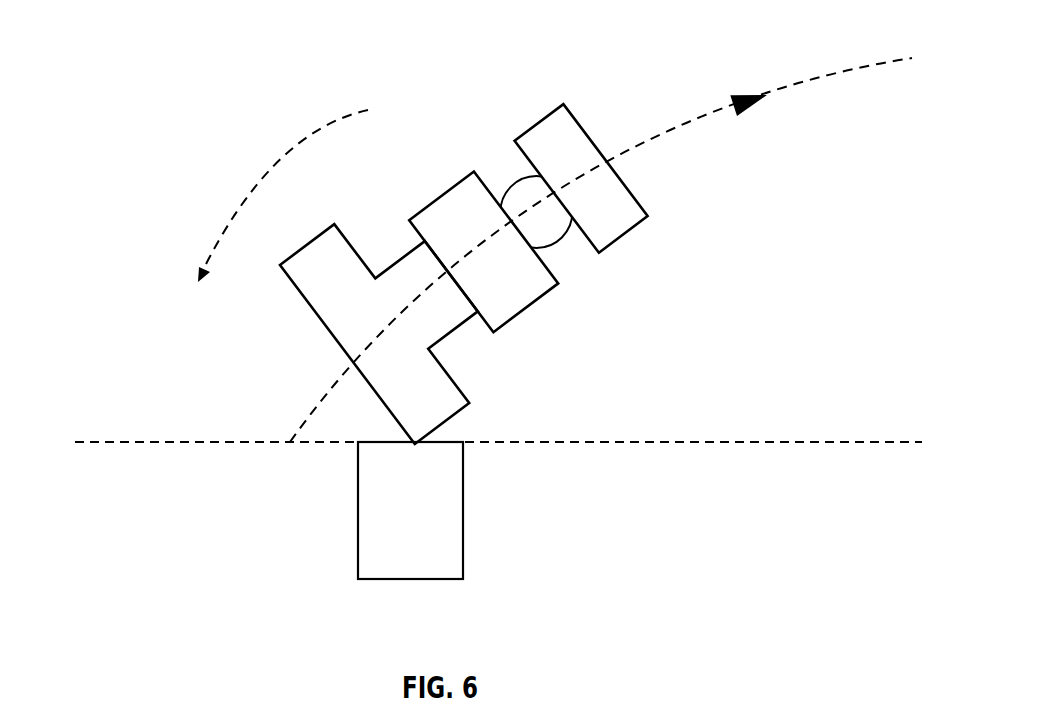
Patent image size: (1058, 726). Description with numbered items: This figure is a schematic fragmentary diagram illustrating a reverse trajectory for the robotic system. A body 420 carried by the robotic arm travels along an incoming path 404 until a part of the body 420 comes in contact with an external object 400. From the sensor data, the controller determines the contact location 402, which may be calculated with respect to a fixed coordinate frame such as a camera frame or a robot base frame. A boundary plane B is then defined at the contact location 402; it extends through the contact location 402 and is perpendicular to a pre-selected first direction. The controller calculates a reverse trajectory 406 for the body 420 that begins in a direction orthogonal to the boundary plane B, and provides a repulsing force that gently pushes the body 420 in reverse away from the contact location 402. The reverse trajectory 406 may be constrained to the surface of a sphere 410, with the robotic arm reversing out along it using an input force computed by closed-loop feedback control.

The external object 400 is at (340, 530).
The contact location 402 is at (415, 455).
The incoming path 404 is at (278, 162).
The reverse trajectory 406 is at (655, 102).
The sphere 410 is at (830, 77).
The body 420 is at (407, 162).
The boundary plane B is at (603, 442).